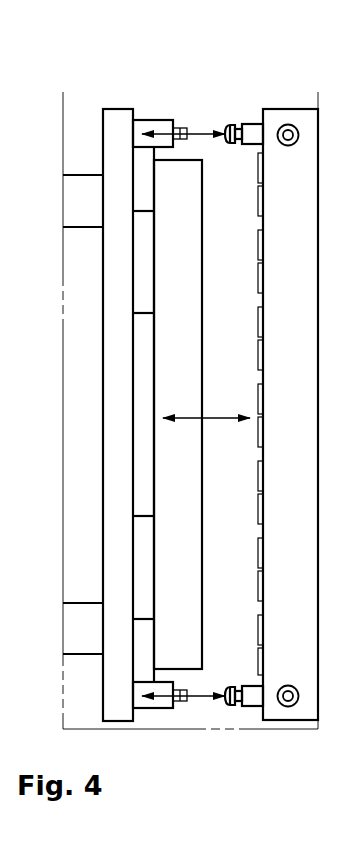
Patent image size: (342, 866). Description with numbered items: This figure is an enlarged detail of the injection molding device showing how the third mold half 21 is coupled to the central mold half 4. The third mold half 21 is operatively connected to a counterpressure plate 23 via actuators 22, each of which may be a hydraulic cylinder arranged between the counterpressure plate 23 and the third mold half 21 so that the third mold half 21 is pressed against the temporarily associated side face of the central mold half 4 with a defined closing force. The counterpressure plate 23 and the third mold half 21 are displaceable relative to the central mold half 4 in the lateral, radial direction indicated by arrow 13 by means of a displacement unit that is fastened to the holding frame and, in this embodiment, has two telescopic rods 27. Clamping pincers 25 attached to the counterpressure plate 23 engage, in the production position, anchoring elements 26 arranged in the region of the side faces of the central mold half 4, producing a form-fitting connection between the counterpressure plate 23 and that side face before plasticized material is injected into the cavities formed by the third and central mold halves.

The central mold half 4 is at (288, 376).
The arrow 13 is at (206, 406).
The third mold half 21 is at (107, 414).
The actuator 22 is at (83, 415).
The counterpressure plate 23 is at (85, 376).
The clamping pincers 25 is at (169, 370).
The anchoring element 26 is at (226, 369).
The telescopic rod 27 is at (56, 406).